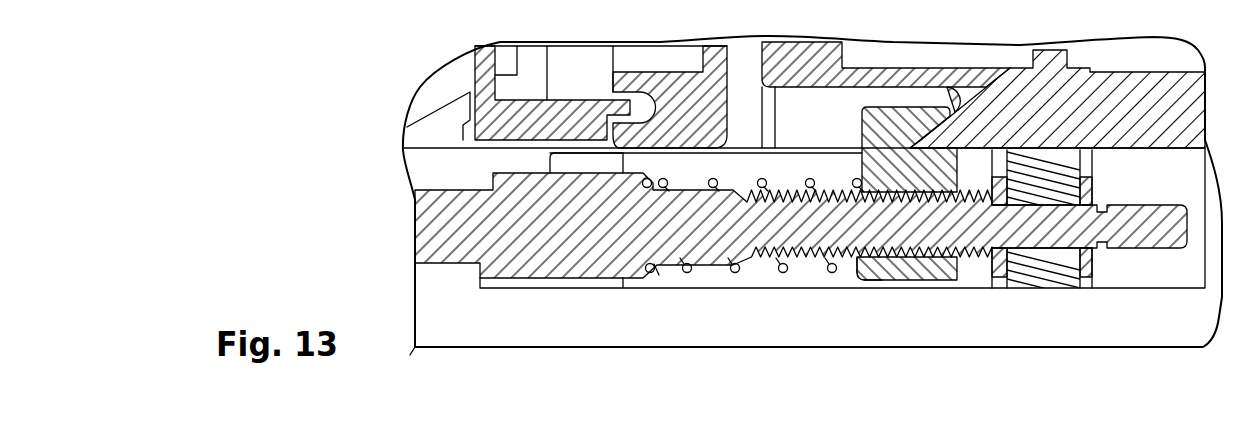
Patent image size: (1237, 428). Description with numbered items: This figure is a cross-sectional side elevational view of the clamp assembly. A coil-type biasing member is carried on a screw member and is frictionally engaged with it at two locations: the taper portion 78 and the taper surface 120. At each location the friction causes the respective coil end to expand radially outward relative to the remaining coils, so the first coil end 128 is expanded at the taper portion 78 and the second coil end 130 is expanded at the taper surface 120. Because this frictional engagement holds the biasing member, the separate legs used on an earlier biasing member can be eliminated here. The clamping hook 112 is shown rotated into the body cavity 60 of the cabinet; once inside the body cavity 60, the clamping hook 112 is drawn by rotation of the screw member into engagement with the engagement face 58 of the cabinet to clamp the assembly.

The engagement face 58 is at (957, 111).
The body cavity 60 is at (787, 137).
The taper portion 78 is at (660, 270).
The clamping hook 112 is at (927, 273).
The taper surface 120 is at (860, 268).
The first coil end 128 is at (656, 273).
The second coil end 130 is at (833, 195).